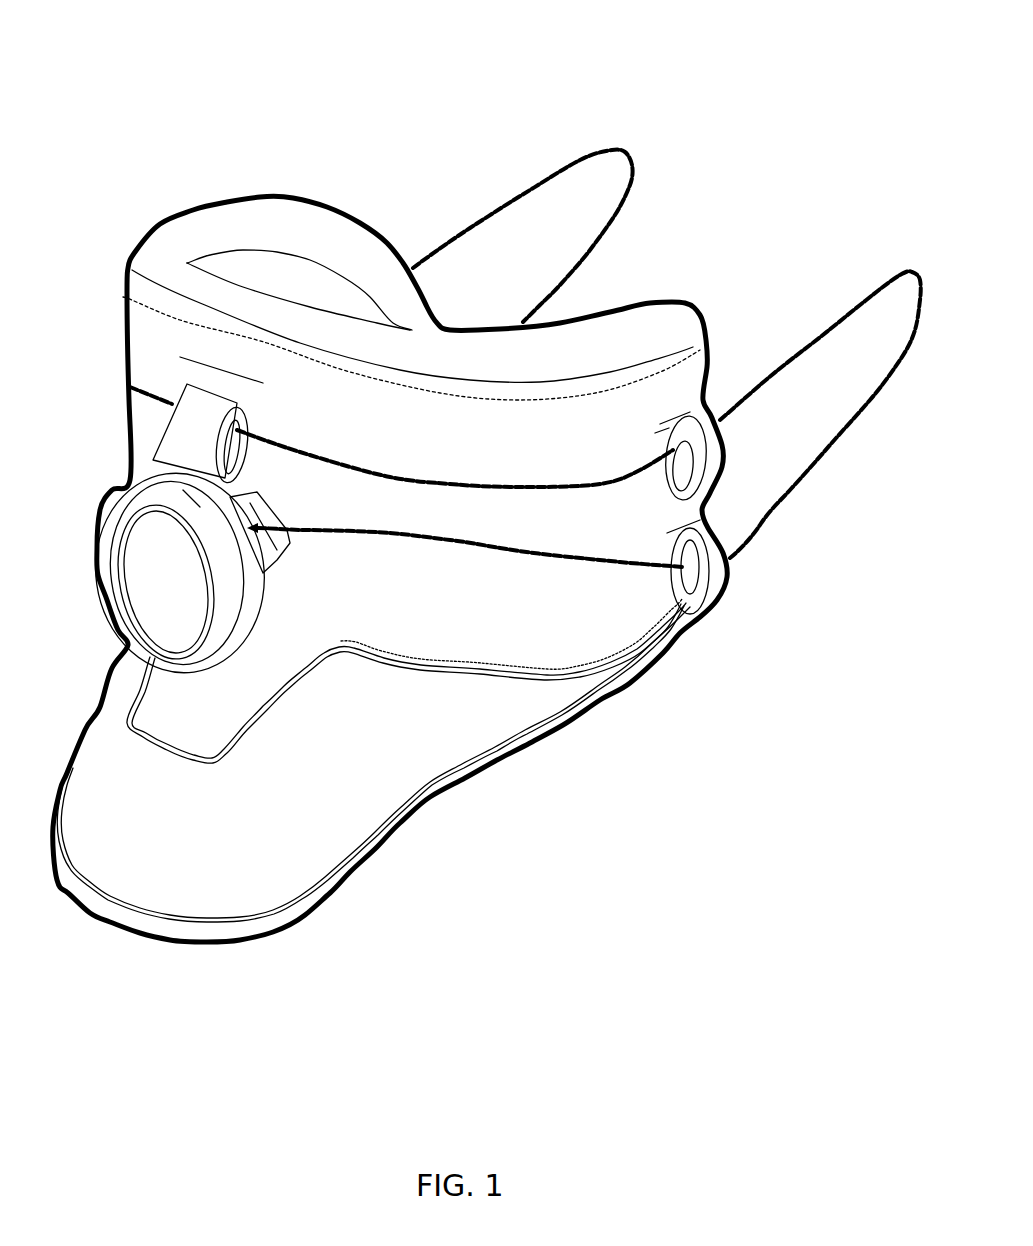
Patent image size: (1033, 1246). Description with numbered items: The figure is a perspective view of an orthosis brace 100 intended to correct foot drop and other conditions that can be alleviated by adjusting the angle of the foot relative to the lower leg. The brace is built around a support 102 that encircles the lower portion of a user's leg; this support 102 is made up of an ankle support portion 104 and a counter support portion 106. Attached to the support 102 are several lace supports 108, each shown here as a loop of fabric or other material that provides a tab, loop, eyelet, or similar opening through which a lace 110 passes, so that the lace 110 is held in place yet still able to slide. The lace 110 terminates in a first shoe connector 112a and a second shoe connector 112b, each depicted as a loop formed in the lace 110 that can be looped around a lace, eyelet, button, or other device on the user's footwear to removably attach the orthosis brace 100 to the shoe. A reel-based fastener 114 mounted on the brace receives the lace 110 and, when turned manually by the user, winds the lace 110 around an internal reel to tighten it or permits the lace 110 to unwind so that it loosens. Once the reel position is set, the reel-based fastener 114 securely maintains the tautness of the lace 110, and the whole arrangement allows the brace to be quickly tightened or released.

The orthosis brace 100 is at (222, 80).
The support 102 is at (503, 771).
The ankle support portion 104 is at (605, 619).
The counter support portion 106 is at (233, 877).
The lace supports 108 is at (193, 437).
The lace 110 is at (513, 201).
The first shoe connector 112a is at (620, 151).
The second shoe connector 112b is at (890, 273).
The reel-based fastener 114 is at (167, 578).